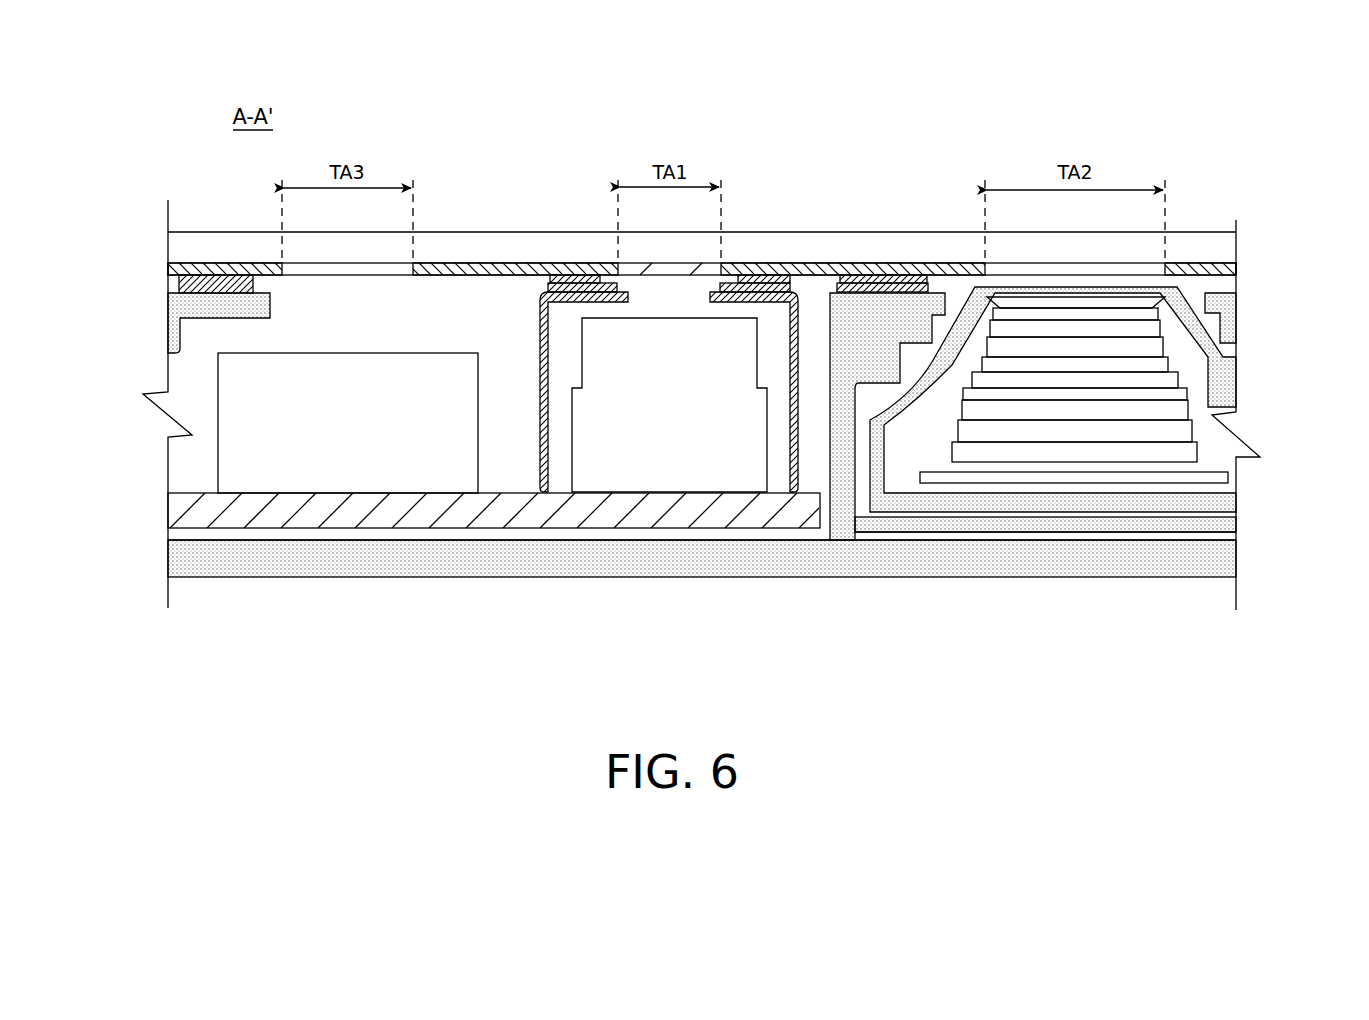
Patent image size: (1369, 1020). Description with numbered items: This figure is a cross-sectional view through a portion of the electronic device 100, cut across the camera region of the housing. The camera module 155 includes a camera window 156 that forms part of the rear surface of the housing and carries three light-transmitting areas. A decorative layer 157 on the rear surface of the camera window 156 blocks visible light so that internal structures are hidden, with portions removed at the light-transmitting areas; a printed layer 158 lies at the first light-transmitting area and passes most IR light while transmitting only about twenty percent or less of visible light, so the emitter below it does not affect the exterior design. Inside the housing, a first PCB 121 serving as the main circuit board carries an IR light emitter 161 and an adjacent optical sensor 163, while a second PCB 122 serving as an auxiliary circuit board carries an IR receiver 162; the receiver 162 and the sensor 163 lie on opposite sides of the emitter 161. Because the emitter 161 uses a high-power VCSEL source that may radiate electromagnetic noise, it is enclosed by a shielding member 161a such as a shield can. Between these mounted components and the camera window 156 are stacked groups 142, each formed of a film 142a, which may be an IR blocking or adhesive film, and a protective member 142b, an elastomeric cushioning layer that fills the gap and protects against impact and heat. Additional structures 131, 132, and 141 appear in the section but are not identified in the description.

The electronic device 100 is at (212, 185).
The first PCB 121 is at (227, 512).
The second PCB 122 is at (1198, 515).
The substrate 131 is at (440, 560).
The sealing member 132 is at (182, 312).
The pad electrode 141 is at (185, 286).
The touch electrode 142 is at (744, 201).
The film 142a is at (552, 287).
The protective member 142b is at (557, 280).
The camera module 155 is at (1216, 250).
The camera window 156 is at (1217, 247).
The decorative layer 157 is at (172, 268).
The printed layer 158 is at (656, 268).
The IR light emitter 161 is at (717, 466).
The shielding member 161a is at (541, 440).
The IR receiver 162 is at (1076, 452).
The optical sensor 163 is at (321, 470).